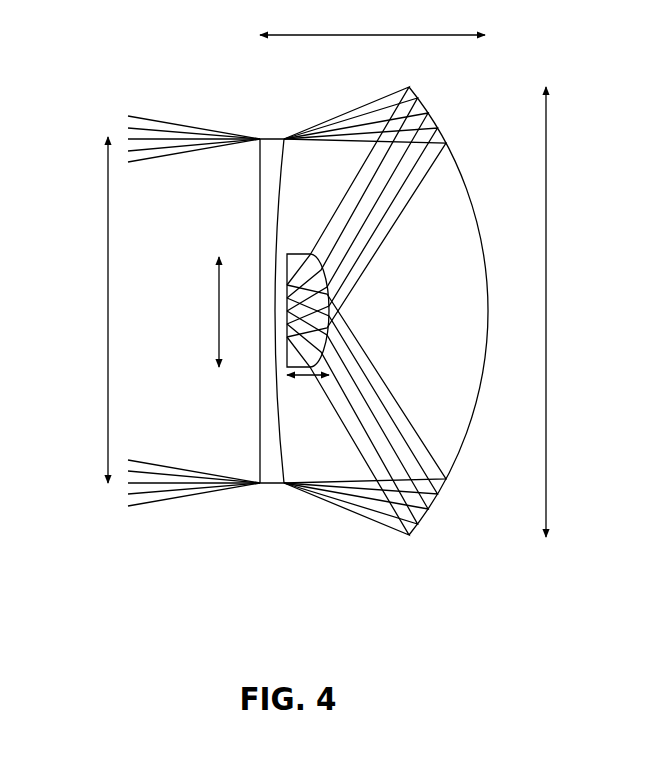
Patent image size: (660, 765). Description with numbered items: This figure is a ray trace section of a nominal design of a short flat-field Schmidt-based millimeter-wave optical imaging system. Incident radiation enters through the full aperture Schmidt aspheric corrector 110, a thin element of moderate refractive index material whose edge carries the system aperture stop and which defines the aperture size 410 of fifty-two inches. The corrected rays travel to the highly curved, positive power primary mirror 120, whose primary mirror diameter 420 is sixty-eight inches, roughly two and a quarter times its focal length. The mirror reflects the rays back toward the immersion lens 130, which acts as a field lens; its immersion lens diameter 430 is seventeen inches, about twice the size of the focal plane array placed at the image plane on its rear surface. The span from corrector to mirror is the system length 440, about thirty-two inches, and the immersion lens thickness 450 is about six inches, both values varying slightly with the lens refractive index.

The Schmidt aspheric corrector 110 is at (260, 227).
The primary mirror 120 is at (470, 197).
The immersion lens 130 is at (297, 253).
The aperture size 410 is at (71, 310).
The primary mirror diameter 420 is at (575, 312).
The immersion lens diameter 430 is at (196, 312).
The system length 440 is at (372, 18).
The immersion lens thickness 450 is at (304, 388).